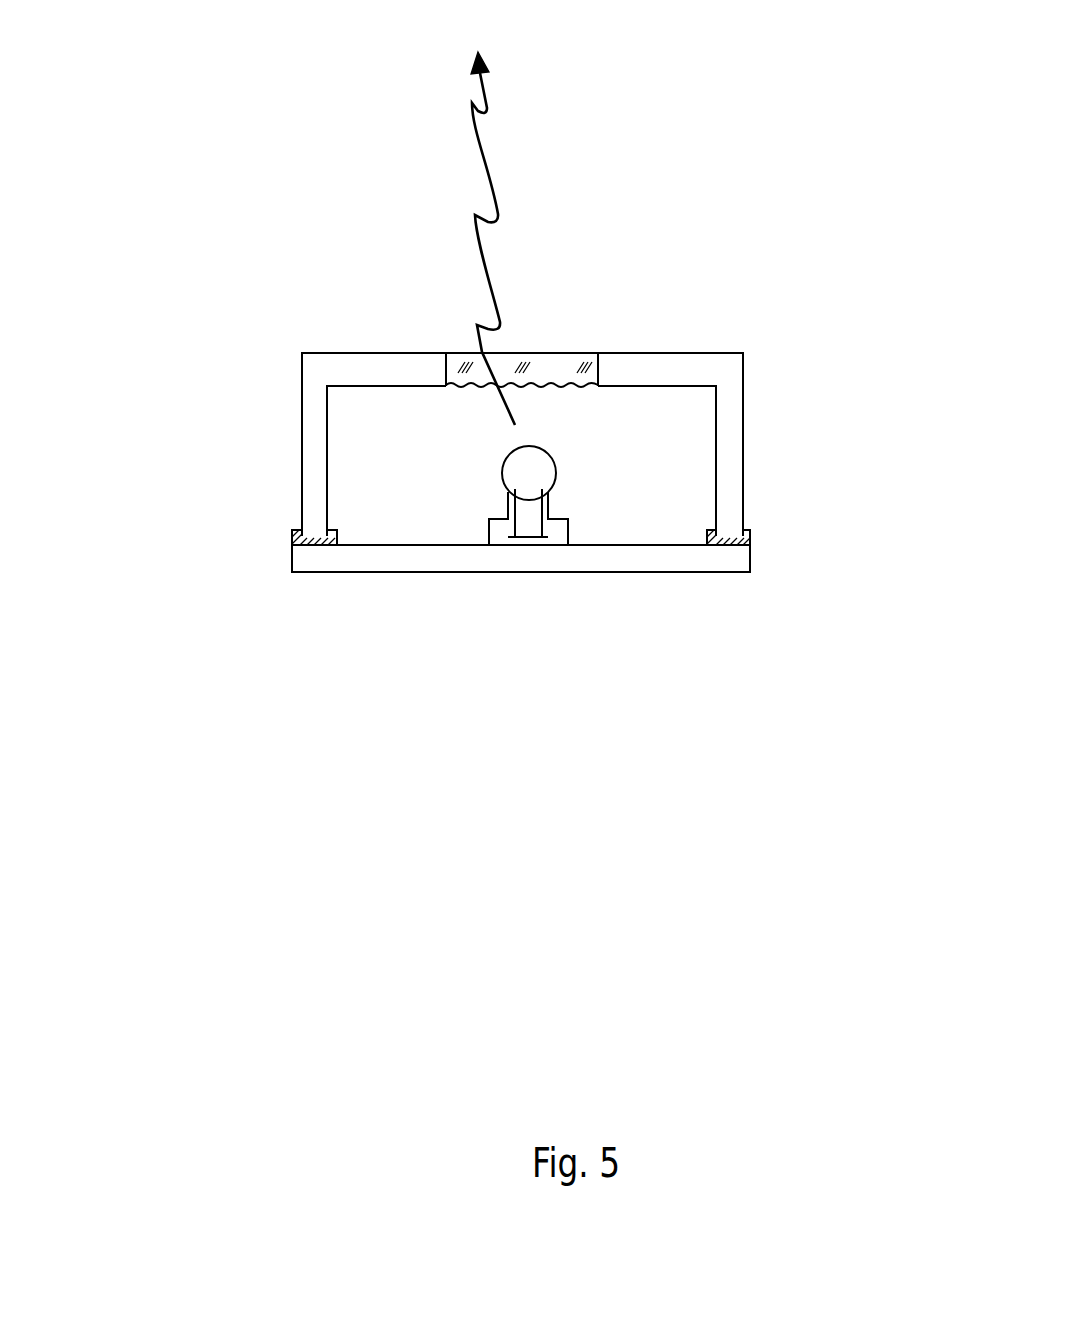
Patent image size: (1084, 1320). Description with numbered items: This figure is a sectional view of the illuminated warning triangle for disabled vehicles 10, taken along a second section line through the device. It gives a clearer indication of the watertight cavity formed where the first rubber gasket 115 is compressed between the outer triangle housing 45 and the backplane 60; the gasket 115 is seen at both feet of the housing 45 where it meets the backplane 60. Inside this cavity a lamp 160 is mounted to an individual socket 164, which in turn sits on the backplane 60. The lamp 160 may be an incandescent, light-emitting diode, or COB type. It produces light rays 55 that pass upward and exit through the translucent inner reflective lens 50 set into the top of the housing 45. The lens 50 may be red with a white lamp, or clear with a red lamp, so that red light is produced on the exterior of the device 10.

The illuminated warning triangle for disabled vehicles 10 is at (211, 844).
The outer triangle housing 45 is at (330, 367).
The inner reflective lens 50 is at (525, 370).
The light rays 55 is at (495, 188).
The backplane 60 is at (642, 557).
The first rubber gasket 115 is at (748, 532).
The lamp 160 is at (525, 477).
The socket 164 is at (568, 528).